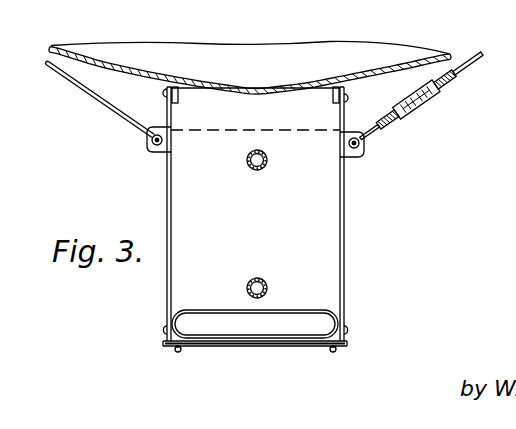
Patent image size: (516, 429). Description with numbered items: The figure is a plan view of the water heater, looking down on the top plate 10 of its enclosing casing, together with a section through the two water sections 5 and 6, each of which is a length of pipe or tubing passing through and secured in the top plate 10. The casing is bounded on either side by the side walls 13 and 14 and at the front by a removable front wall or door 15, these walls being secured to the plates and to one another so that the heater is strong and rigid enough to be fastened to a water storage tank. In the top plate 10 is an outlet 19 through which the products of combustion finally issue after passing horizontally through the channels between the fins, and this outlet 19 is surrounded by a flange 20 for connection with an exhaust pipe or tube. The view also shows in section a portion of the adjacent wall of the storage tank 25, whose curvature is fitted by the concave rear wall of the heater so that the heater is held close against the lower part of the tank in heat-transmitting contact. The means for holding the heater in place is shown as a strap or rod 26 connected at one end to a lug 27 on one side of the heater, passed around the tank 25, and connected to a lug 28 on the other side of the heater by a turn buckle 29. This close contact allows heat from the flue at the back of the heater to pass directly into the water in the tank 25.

The storage tank 25 is at (268, 92).
The strap or rod 26 is at (92, 97).
The lug 27 is at (152, 151).
The lug 28 is at (357, 157).
The turn buckle 29 is at (418, 116).
The side wall 14 is at (167, 194).
The side wall 13 is at (346, 249).
The top plate 10 is at (183, 268).
The water section 6 is at (249, 172).
The water section 5 is at (267, 279).
The outlet 19 is at (298, 324).
The removable front wall or door 15 is at (290, 350).
The flange 20 is at (215, 340).